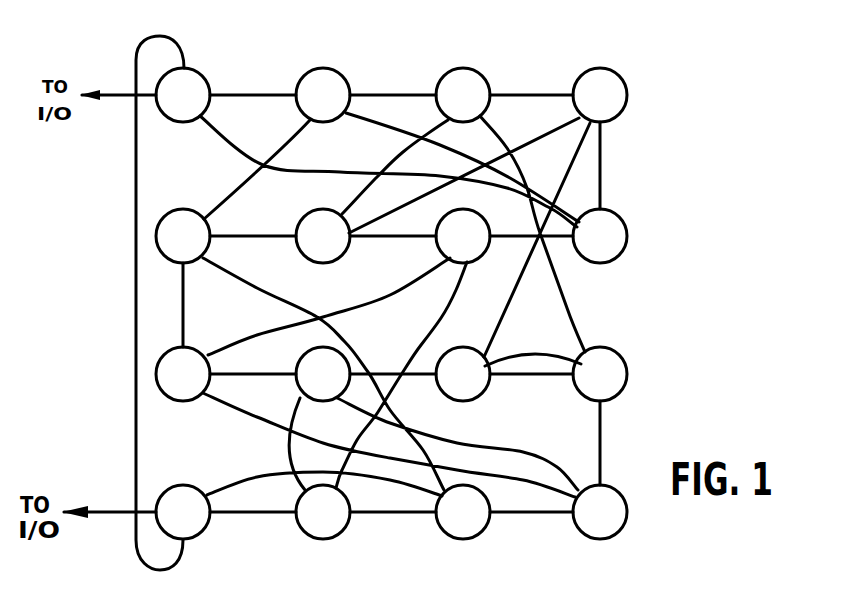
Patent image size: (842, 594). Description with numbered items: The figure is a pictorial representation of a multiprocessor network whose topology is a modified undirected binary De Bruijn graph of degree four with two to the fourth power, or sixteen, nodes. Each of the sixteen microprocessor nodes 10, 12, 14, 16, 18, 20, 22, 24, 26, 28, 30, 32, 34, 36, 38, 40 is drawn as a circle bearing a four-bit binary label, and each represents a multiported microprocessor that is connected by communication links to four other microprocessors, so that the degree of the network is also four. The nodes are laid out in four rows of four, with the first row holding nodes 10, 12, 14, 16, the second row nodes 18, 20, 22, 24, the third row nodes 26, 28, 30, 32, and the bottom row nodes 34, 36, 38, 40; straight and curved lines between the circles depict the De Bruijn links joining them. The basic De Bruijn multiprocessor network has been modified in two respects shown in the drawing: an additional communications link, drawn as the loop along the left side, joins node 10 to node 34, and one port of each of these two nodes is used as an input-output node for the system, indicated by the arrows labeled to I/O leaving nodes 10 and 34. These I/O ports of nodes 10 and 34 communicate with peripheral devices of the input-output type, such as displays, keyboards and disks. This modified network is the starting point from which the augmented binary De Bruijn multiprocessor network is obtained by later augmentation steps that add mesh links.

The microprocessor node 10 is at (193, 68).
The microprocessor node 12 is at (339, 72).
The microprocessor node 14 is at (480, 66).
The microprocessor node 16 is at (628, 88).
The microprocessor node 18 is at (207, 244).
The microprocessor node 20 is at (346, 254).
The microprocessor node 22 is at (477, 258).
The microprocessor node 24 is at (628, 236).
The microprocessor node 26 is at (176, 401).
The microprocessor node 28 is at (296, 382).
The microprocessor node 30 is at (474, 397).
The microprocessor node 32 is at (627, 358).
The microprocessor node 34 is at (203, 529).
The microprocessor node 36 is at (340, 535).
The microprocessor node 38 is at (482, 534).
The microprocessor node 40 is at (628, 512).